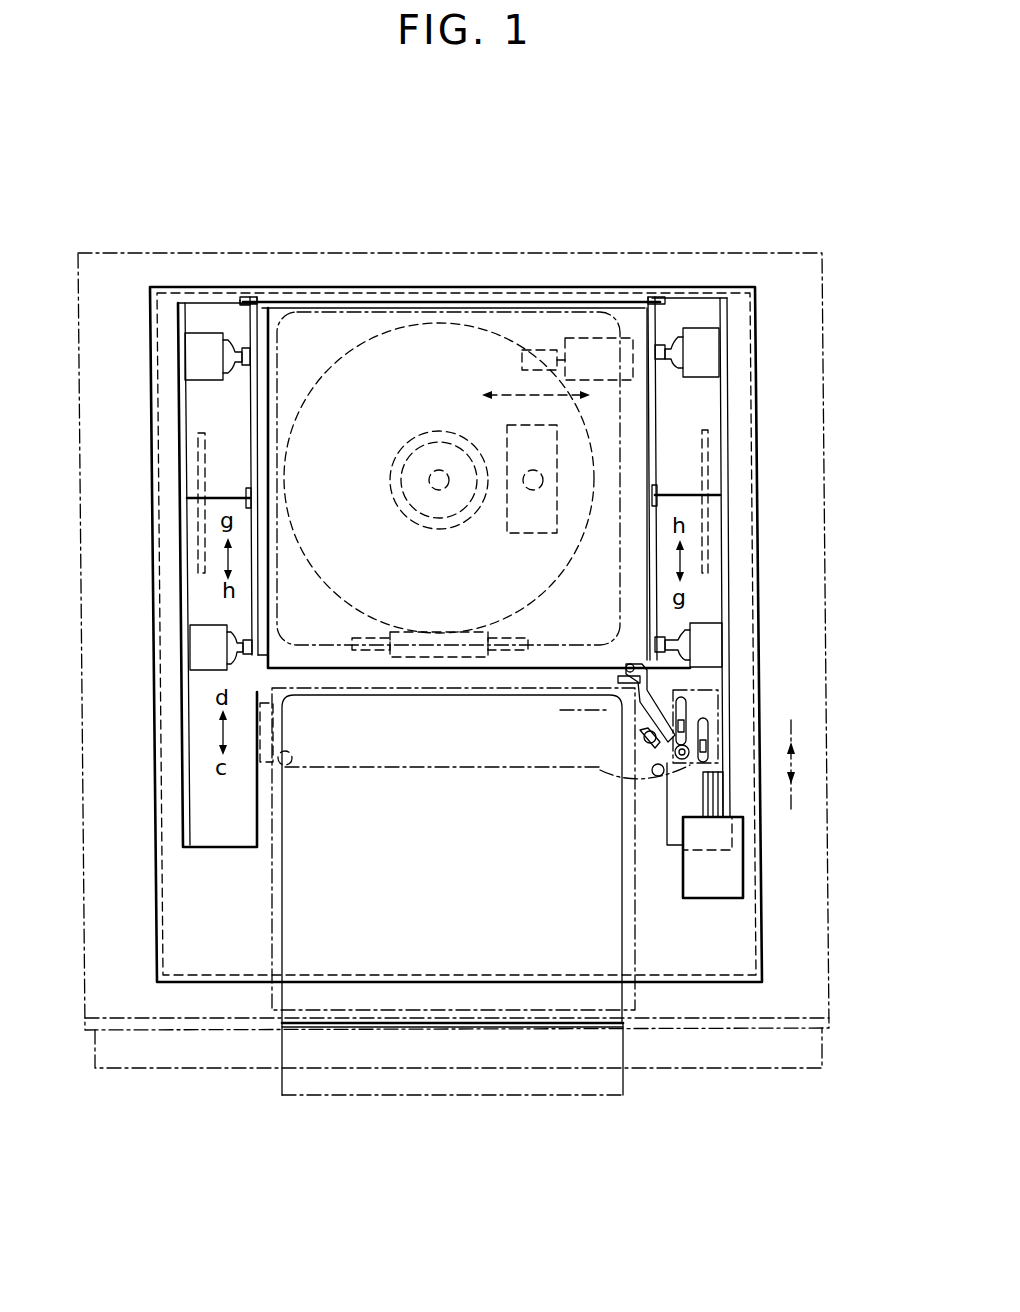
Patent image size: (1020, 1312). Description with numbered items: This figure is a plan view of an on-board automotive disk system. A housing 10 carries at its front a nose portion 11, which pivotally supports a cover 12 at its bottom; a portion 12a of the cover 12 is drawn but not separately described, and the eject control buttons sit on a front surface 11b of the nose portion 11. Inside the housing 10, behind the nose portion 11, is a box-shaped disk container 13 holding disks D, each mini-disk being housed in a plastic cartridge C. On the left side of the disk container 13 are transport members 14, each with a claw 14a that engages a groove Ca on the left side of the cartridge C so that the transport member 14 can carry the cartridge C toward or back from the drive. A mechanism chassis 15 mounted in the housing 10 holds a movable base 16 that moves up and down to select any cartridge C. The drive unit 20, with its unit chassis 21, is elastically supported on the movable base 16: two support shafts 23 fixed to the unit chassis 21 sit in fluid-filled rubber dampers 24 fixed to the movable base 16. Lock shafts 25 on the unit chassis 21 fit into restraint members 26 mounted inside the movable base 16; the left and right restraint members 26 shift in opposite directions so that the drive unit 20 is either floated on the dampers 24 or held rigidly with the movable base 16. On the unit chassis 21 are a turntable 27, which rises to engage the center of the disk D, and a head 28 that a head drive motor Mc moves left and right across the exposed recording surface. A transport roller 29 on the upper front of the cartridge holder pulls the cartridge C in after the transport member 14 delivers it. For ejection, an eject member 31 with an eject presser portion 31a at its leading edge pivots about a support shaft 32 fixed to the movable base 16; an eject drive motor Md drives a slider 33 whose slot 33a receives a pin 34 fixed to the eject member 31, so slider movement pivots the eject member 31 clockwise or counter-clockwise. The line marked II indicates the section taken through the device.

The housing 10 is at (82, 932).
The nose portion 11 is at (118, 1036).
The front surface 11b is at (770, 1032).
The cover 12 is at (160, 1050).
The tray extension 12a is at (663, 1068).
The disk container 13 is at (268, 990).
The transport member 14 is at (258, 745).
The claw 14a is at (277, 783).
The mechanism chassis 15 is at (758, 647).
The movable base 16 is at (728, 428).
The drive unit 20 is at (668, 408).
The unit chassis 21 is at (655, 617).
The support shaft 23 is at (242, 347).
The damper 24 is at (197, 353).
The lock shaft 25 is at (215, 497).
The restraint member 26 is at (200, 537).
The turntable 27 is at (437, 445).
The head 28 is at (527, 522).
The transport roller 29 is at (436, 660).
The eject member 31 is at (640, 702).
The eject presser portion 31a is at (600, 688).
The support shaft 32 is at (690, 770).
The slider 33 is at (752, 690).
The slot 33a is at (650, 742).
The pin 34 is at (632, 772).
The cartridge C is at (272, 330).
The groove Ca is at (292, 756).
The disk D is at (345, 345).
The head drive motor Mc is at (600, 338).
The eject drive motor Md is at (735, 881).
The section line II is at (828, 603).